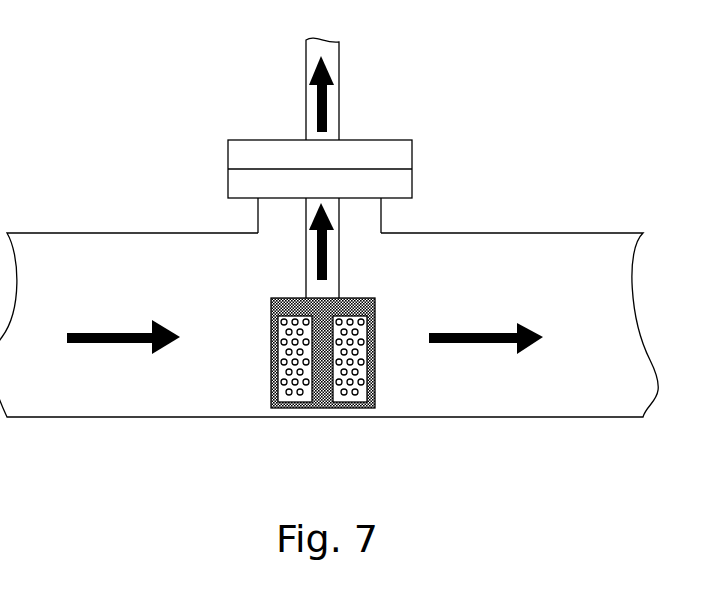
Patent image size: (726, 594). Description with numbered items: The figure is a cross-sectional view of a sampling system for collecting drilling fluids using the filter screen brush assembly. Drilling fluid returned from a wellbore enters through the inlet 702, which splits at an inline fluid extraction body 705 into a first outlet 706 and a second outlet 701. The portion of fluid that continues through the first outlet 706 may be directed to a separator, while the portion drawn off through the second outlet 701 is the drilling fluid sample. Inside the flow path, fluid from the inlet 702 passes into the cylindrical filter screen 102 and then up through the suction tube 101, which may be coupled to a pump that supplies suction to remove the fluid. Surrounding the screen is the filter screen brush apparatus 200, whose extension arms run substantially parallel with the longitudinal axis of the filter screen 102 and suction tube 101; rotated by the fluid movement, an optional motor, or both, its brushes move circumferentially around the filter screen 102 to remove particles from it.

The second outlet 701 is at (338, 65).
The inline fluid extraction body 705 is at (397, 140).
The suction tube 101 is at (335, 277).
The filter screen brush apparatus 200 is at (273, 367).
The filter screen 102 is at (352, 387).
The inlet 702 is at (98, 417).
The first outlet 706 is at (497, 417).